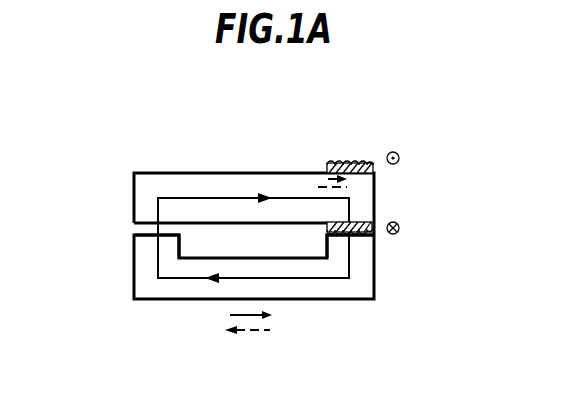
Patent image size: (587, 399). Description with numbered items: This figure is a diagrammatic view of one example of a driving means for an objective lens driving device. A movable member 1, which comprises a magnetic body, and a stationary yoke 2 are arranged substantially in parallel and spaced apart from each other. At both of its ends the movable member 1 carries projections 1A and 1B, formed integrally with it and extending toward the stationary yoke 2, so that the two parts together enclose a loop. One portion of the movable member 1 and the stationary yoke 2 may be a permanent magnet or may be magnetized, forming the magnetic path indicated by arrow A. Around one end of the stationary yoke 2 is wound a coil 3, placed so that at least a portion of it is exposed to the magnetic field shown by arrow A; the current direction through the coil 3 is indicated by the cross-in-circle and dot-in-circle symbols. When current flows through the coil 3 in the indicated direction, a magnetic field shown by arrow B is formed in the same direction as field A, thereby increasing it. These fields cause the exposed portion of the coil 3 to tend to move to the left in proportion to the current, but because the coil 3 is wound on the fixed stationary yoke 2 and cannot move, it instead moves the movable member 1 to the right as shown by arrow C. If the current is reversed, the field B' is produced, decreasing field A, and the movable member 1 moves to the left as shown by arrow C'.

The movable member 1 is at (153, 291).
The projection 1A is at (145, 243).
The projection 1B is at (362, 243).
The stationary yoke 2 is at (222, 187).
The coil 3 is at (352, 162).
The magnetic path arrow A is at (272, 196).
The magnetic field arrow B is at (330, 151).
The reversed magnetic field arrow B' is at (380, 194).
The movement direction arrow C is at (228, 329).
The reversed movement direction arrow C' is at (264, 351).